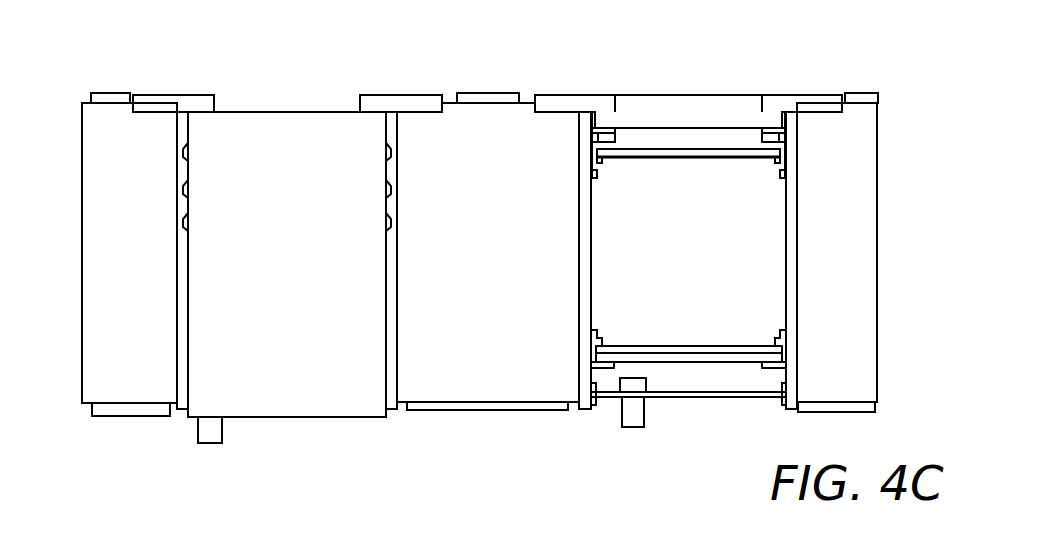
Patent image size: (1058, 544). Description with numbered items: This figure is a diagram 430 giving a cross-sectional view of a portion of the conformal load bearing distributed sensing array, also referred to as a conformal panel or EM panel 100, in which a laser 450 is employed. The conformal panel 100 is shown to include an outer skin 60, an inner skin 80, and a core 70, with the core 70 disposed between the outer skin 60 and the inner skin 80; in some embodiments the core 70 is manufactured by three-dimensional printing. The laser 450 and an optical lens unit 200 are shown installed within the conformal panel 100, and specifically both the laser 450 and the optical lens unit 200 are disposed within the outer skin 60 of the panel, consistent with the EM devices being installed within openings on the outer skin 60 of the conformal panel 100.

The conformal panel 100 is at (153, 80).
The laser 450 is at (295, 90).
The outer skin 60 is at (492, 95).
The optical lens unit 200 is at (700, 90).
The core 70 is at (462, 380).
The inner skin 80 is at (512, 409).
The diagram 430 is at (313, 486).